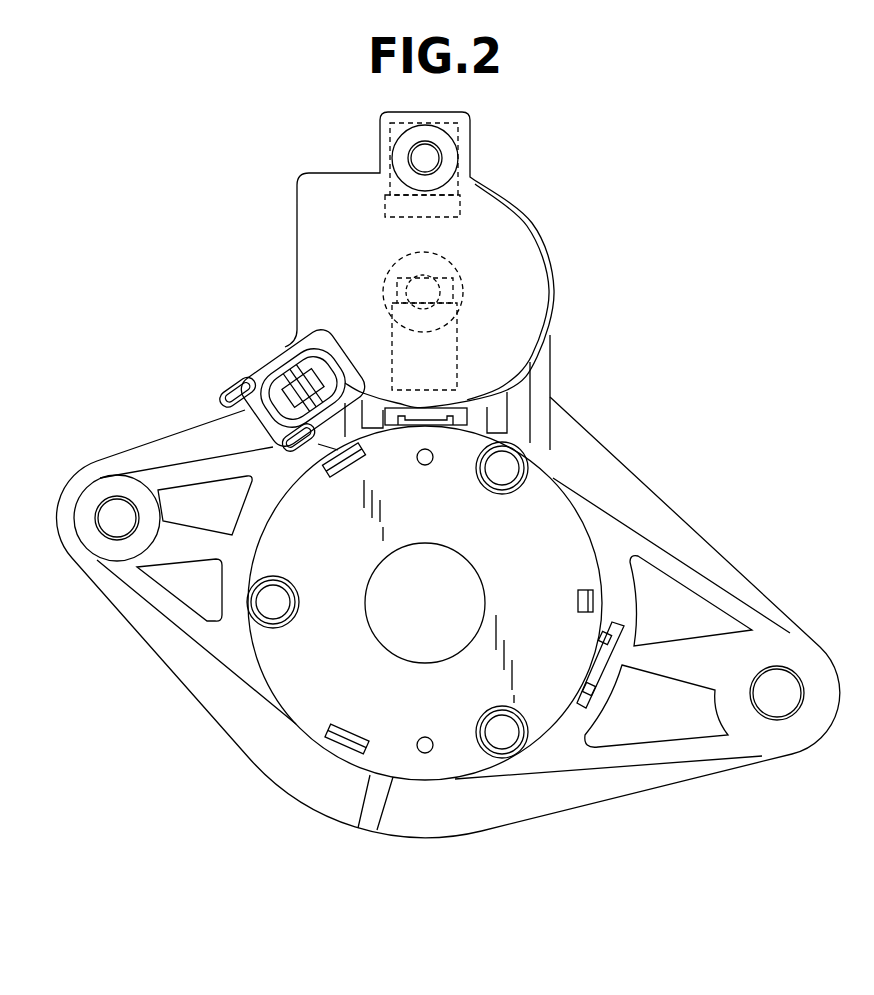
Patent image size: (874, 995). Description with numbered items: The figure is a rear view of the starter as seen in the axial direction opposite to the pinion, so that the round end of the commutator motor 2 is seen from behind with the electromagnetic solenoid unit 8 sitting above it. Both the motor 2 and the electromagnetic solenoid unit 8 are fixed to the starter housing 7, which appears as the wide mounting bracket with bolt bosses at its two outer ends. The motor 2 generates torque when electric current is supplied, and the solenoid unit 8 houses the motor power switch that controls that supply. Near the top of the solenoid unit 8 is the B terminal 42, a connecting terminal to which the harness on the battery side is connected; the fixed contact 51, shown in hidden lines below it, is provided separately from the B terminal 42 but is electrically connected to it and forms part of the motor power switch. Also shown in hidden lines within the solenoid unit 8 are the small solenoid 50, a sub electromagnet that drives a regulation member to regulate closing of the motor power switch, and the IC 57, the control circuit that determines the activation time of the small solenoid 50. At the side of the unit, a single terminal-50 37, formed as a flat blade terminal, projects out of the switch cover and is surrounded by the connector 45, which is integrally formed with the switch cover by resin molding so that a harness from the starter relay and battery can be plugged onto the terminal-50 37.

The commutator motor 2 is at (452, 779).
The starter housing 7 is at (655, 515).
The electromagnetic solenoid unit 8 is at (531, 215).
The terminal-50 37 is at (317, 383).
The B terminal 42 is at (428, 158).
The connector 45 is at (277, 357).
The small solenoid 50 is at (461, 273).
The fixed contact 51 is at (385, 207).
The IC 57 is at (458, 345).